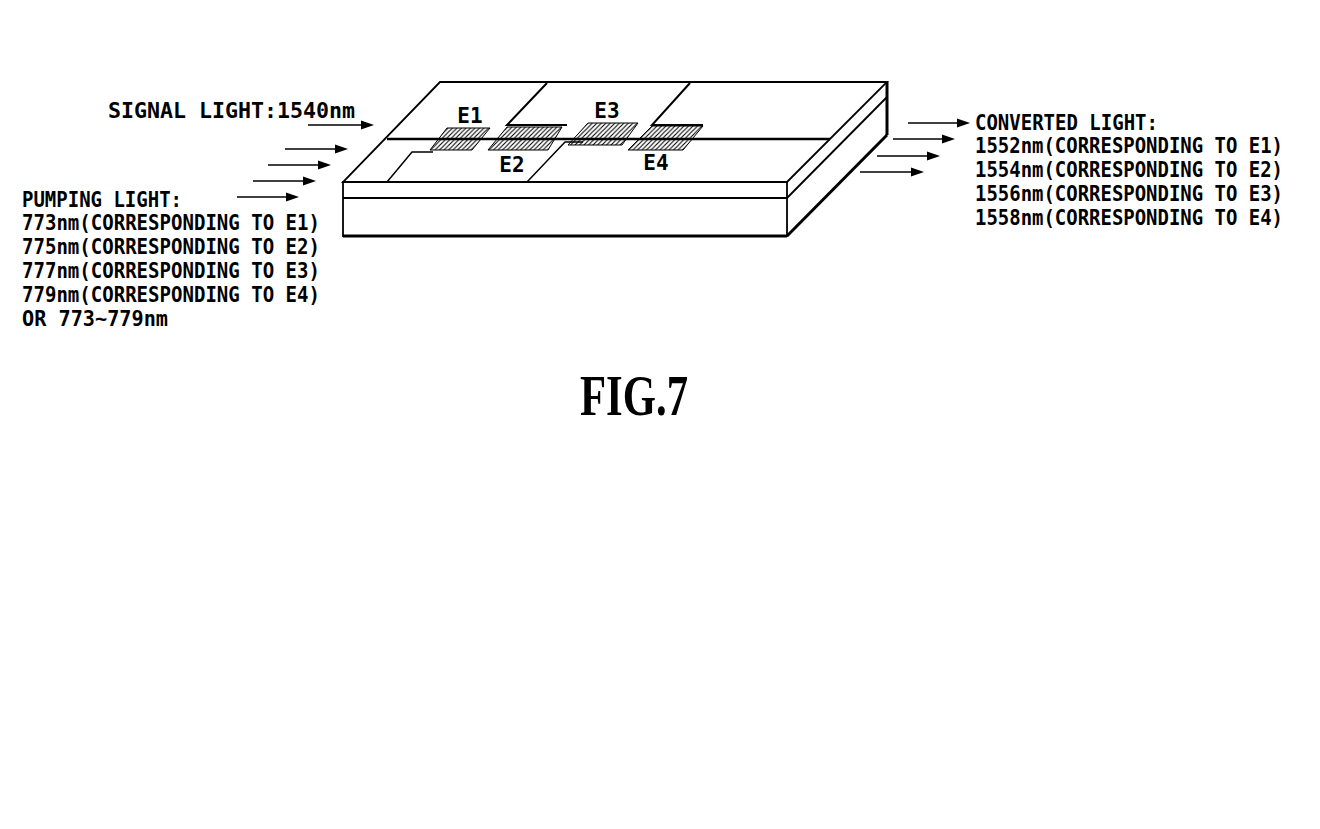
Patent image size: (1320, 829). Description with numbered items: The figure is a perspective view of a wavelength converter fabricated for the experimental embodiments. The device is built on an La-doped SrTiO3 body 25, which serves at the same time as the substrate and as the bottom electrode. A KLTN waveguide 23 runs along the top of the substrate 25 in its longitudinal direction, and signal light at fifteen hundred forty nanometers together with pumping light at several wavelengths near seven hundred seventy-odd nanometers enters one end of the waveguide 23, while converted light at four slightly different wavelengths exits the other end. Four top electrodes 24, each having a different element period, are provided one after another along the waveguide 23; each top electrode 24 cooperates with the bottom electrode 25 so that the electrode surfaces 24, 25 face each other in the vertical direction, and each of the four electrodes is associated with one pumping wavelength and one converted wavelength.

The KLTN waveguide 23 is at (790, 138).
The top electrode 24 is at (560, 122).
The La-doped SrTiO3 bottom electrode and substrate 25 is at (695, 227).